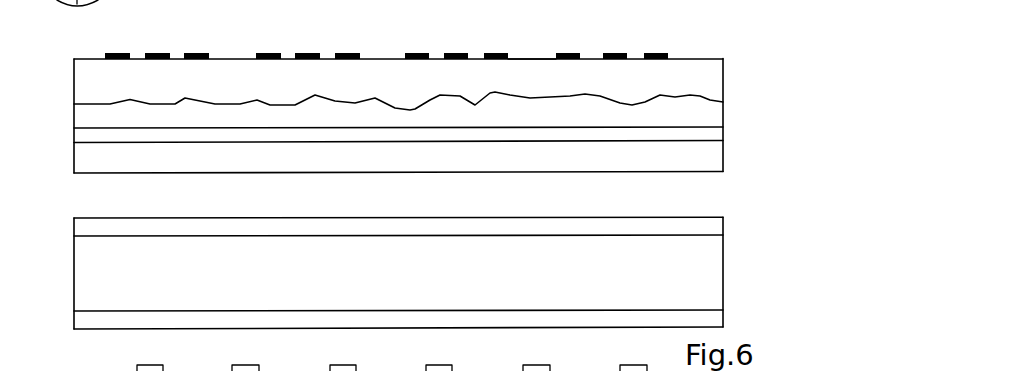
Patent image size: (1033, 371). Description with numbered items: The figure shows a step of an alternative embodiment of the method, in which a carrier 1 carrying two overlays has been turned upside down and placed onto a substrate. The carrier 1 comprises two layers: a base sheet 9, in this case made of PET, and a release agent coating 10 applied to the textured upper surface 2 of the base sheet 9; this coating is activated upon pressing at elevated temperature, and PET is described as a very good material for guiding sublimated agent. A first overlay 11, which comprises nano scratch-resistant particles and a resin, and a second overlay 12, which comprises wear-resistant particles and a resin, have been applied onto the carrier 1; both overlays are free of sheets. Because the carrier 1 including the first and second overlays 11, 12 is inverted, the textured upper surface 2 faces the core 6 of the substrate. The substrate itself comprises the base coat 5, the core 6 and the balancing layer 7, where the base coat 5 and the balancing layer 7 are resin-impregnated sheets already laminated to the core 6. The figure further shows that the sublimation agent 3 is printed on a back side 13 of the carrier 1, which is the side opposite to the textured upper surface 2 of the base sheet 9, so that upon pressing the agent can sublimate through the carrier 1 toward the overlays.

The carrier 1 is at (741, 59).
The textured upper surface 2 is at (681, 96).
The sublimation agent 3 is at (307, 51).
The base coat 5 is at (80, 229).
The core 6 is at (80, 285).
The balancing layer 7 is at (80, 320).
The base sheet 9 is at (89, 77).
The release agent coating 10 is at (84, 117).
The first overlay 11 is at (85, 135).
The second overlay 12 is at (80, 160).
The back side 13 is at (524, 57).